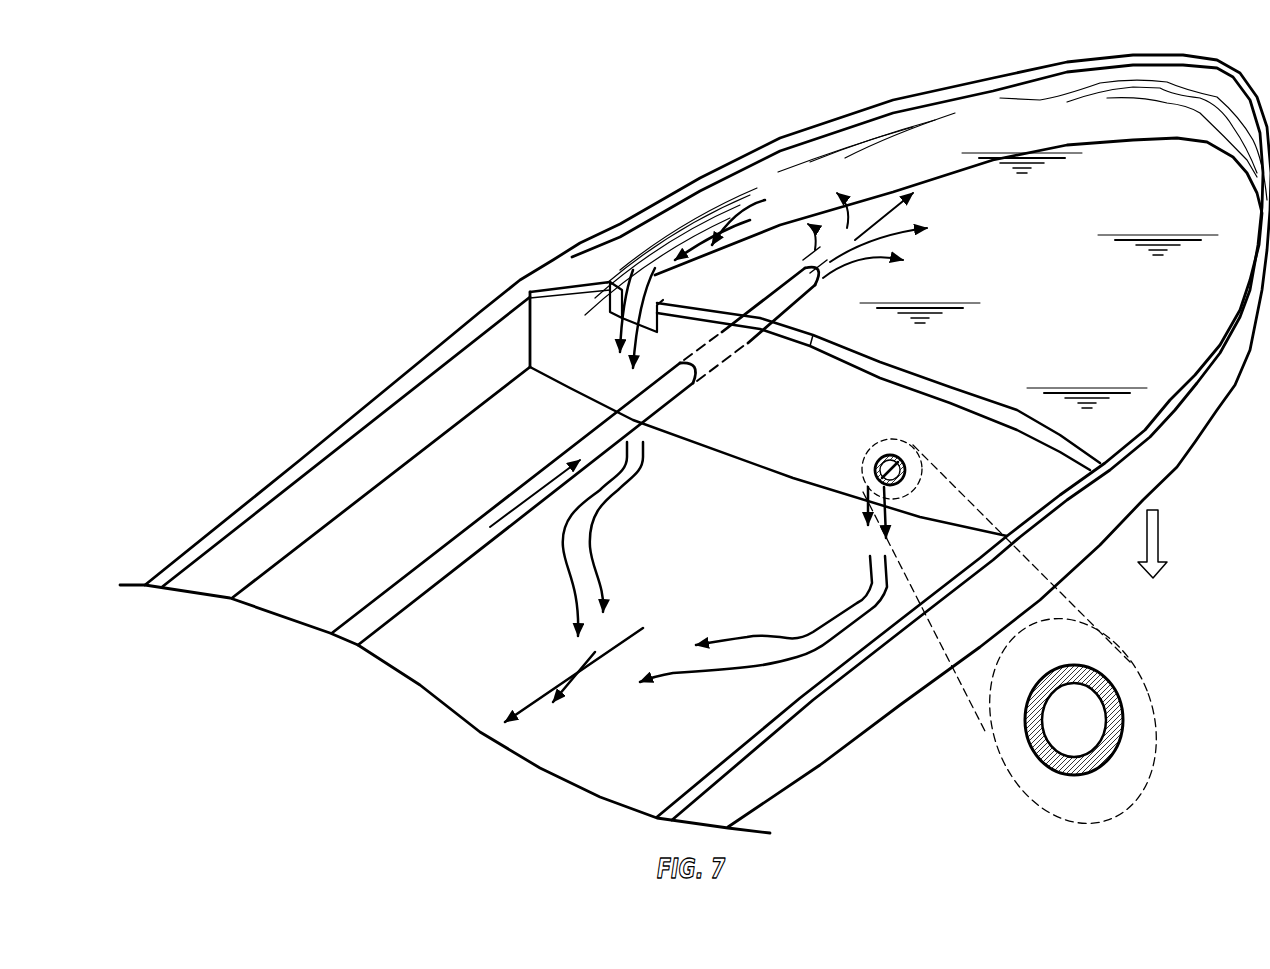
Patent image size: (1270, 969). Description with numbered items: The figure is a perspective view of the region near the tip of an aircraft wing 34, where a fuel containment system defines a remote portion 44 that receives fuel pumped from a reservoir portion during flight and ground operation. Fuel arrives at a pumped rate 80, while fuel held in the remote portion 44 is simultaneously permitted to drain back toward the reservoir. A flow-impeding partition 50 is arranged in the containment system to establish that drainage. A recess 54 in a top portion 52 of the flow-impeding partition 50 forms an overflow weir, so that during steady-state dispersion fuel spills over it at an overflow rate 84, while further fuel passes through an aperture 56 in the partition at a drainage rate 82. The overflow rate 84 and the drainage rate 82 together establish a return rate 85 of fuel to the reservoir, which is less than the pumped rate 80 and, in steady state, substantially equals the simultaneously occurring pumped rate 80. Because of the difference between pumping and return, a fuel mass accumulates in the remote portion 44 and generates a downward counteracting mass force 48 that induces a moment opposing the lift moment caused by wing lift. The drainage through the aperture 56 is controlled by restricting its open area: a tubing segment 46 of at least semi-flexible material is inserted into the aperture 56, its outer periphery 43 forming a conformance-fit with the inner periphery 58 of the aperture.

The wing 34 is at (1190, 490).
The outer periphery 43 is at (1077, 773).
The remote portion 44 is at (986, 62).
The tubing segment 46 is at (1112, 736).
The downward counteracting mass force 48 is at (1152, 561).
The flow-impeding partition 50 is at (575, 312).
The top portion 52 is at (524, 335).
The recess 54 is at (612, 325).
The aperture 56 is at (1080, 662).
The inner periphery 58 is at (1068, 674).
The pumped rate 80 is at (870, 236).
The drainage rate 82 is at (883, 488).
The overflow rate 84 is at (745, 222).
The return rate 85 is at (573, 667).